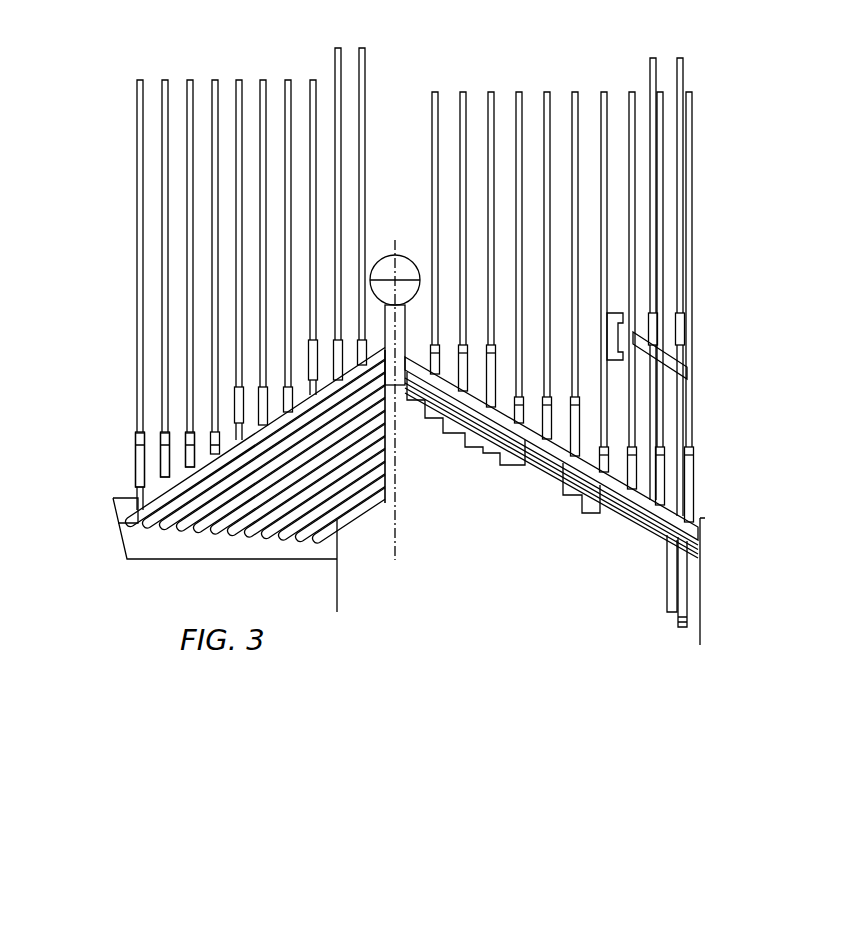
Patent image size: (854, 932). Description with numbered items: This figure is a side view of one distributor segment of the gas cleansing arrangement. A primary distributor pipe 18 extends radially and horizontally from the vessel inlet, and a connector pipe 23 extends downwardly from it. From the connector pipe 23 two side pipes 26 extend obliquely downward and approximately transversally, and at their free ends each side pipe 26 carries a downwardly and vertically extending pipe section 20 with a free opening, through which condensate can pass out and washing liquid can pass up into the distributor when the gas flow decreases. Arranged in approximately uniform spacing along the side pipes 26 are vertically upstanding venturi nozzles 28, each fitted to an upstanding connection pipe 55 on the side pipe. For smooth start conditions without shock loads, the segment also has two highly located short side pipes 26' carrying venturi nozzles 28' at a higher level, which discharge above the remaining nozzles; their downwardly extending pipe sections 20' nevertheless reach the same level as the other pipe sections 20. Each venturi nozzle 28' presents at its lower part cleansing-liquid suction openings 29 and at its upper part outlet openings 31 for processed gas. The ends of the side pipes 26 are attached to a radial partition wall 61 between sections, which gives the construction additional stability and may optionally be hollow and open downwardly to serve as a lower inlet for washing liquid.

The primary distributor pipe 18 is at (385, 256).
The pipe section 20 is at (736, 581).
The pipe section 20' is at (624, 573).
The connector pipe 23 is at (406, 318).
The side pipe 26 is at (460, 454).
The short side pipe 26' is at (546, 457).
The venturi nozzle 28 is at (105, 295).
The venturi nozzle 28' is at (513, 258).
The cleansing-liquid suction opening 29 is at (215, 430).
The outlet opening 31 is at (190, 80).
The connection pipe 55 is at (133, 492).
The radial partition wall 61 is at (136, 548).